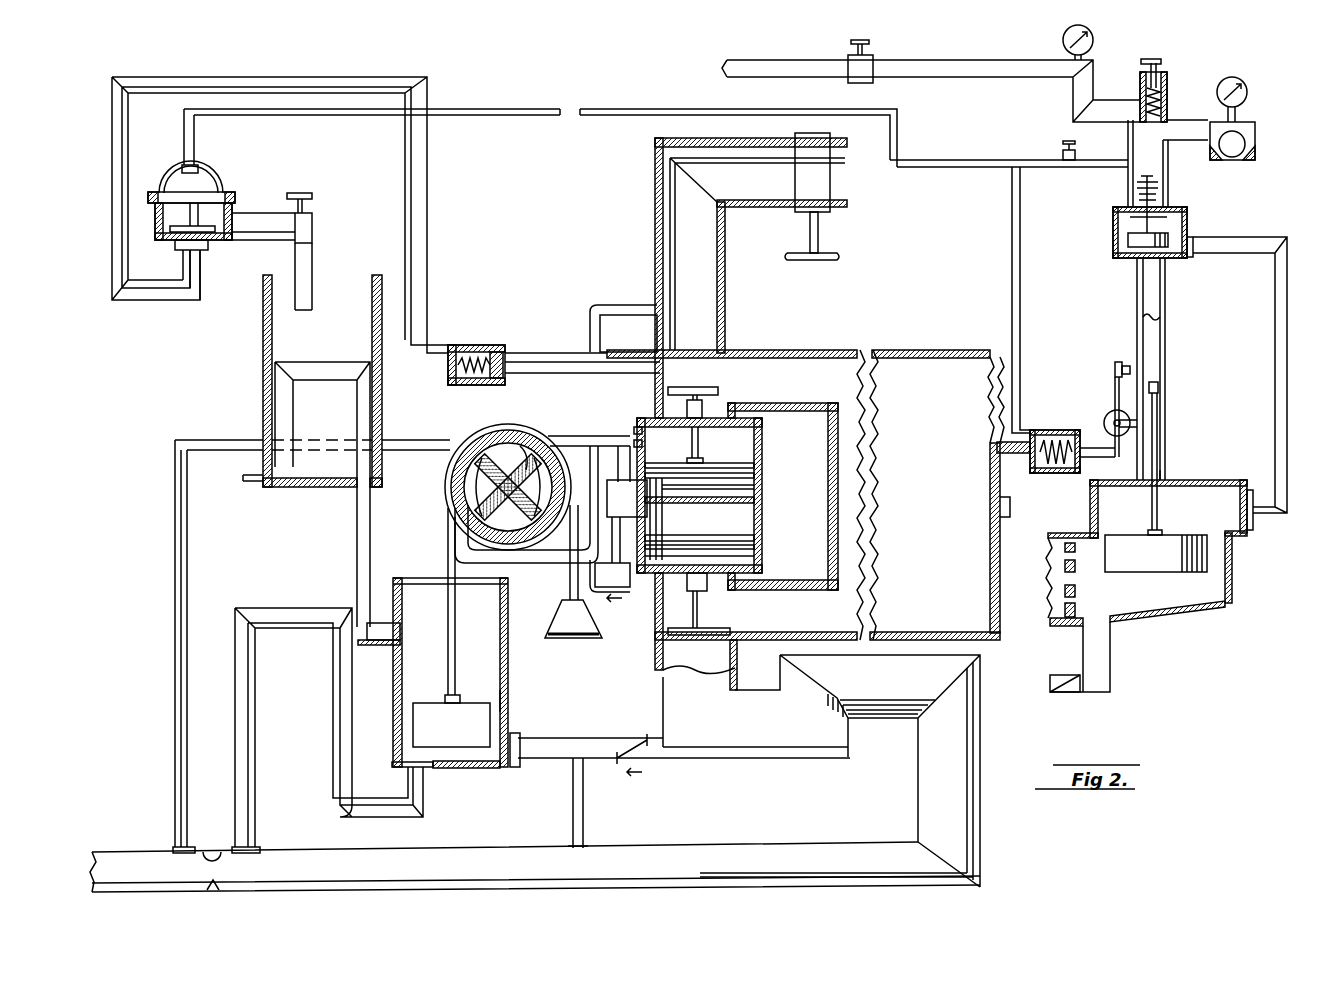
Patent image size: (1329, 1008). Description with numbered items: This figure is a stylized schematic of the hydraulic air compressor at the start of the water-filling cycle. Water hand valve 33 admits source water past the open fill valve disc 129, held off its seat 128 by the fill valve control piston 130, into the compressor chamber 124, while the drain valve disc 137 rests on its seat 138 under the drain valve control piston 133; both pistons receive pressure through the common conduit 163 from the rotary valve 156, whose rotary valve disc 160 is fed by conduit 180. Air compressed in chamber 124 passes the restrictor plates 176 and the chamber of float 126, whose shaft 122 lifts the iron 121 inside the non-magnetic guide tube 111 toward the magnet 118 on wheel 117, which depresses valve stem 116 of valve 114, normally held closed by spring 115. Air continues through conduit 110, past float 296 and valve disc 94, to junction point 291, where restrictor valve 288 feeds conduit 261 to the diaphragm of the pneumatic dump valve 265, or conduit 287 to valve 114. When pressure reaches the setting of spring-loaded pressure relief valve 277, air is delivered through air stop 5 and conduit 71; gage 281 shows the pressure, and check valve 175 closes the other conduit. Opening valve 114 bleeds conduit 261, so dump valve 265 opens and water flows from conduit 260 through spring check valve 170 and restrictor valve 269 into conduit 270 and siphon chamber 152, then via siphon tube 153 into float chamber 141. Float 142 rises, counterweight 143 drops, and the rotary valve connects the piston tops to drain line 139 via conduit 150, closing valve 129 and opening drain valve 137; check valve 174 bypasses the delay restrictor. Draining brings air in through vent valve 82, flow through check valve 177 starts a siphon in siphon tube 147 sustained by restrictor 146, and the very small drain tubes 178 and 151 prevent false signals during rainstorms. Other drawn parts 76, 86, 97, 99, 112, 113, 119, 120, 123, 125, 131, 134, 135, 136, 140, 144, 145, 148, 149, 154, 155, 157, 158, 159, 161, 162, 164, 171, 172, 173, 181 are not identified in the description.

The air stop 5 is at (876, 45).
The air supply conduit 71 is at (760, 72).
The pressure gauge 76 is at (1064, 42).
The spring-loaded pressure relief valve 277 is at (1170, 90).
The gage 281 is at (1243, 78).
The restrictor valve 288 is at (1068, 143).
The conduit 86 is at (1023, 164).
The junction point 291 is at (1127, 161).
The vent valve 82 is at (1248, 160).
The diaphragm 97 is at (1122, 218).
The valve disc 94 is at (1190, 215).
The float 296 is at (1128, 241).
The conduit 99 is at (1138, 262).
The conduit 287 is at (1012, 288).
The conduit 110 is at (1288, 306).
The non-magnetic guide tube 111 is at (1162, 346).
The magnet 118 is at (1113, 366).
The wheel 117 is at (1113, 411).
The pivot 112 is at (1091, 438).
The iron 121 is at (1160, 386).
The shaft 122 is at (1160, 420).
The fitting 113 is at (1010, 457).
The valve 114 is at (1045, 473).
The spring 115 is at (1061, 472).
The valve stem 116 is at (1092, 458).
The arm 120 is at (1131, 430).
The passage 123 is at (1170, 479).
The compressor chamber 124 is at (1242, 483).
The housing 119 is at (1133, 587).
The float 126 is at (1156, 553).
The fitting 125 is at (1256, 522).
The restrictor plates 176 is at (1077, 592).
The check valve 175 is at (1063, 694).
The conduit 261 is at (553, 116).
The restrictor valve 269 is at (313, 196).
The pneumatic dump valve 265 is at (215, 245).
The conduit 270 is at (313, 298).
The spring check valve 170 is at (495, 345).
The conduit 260 is at (520, 352).
The conduit 180 is at (620, 315).
The passage 181 is at (656, 311).
The seat 128 is at (725, 353).
The water hand valve 33 is at (822, 215).
The fill valve disc 129 is at (719, 398).
The fill valve control piston 130 is at (701, 435).
The cylinder 131 is at (762, 440).
The diaphragm 172 is at (664, 488).
The partition 173 is at (664, 506).
The drain valve control piston 133 is at (758, 539).
The plate 134 is at (758, 557).
The coupling 135 is at (708, 588).
The rod 136 is at (699, 620).
The drain valve disc 137 is at (731, 631).
The seat 138 is at (660, 650).
The drain line 139 is at (745, 672).
The conduit 150 is at (412, 440).
The drain tube 151 is at (256, 483).
The siphon chamber 152 is at (334, 487).
The siphon tube 153 is at (358, 522).
The enclosure 154 is at (393, 600).
The rotary valve 155 is at (486, 441).
The rotary valve 156 is at (540, 441).
The outlet 157 is at (560, 440).
The rotary valve disc 160 is at (510, 432).
The vane 161 is at (460, 489).
The vane 162 is at (460, 512).
The return line 158 is at (460, 554).
The conduit 159 is at (554, 533).
The common conduit 163 is at (636, 428).
The fitting 164 is at (637, 440).
The conduit 171 is at (598, 557).
The check valve 174 is at (614, 590).
The counterweight 143 is at (573, 619).
The rod 144 is at (457, 630).
The float 142 is at (451, 725).
The float chamber 141 is at (510, 704).
The fitting 140 is at (520, 738).
The bottom wall 145 is at (432, 766).
The siphon tube 147 is at (392, 812).
The foot 148 is at (263, 845).
The restrictor 146 is at (213, 847).
The foot 149 is at (176, 845).
The check valve 177 is at (638, 741).
The drain tube 178 is at (584, 812).